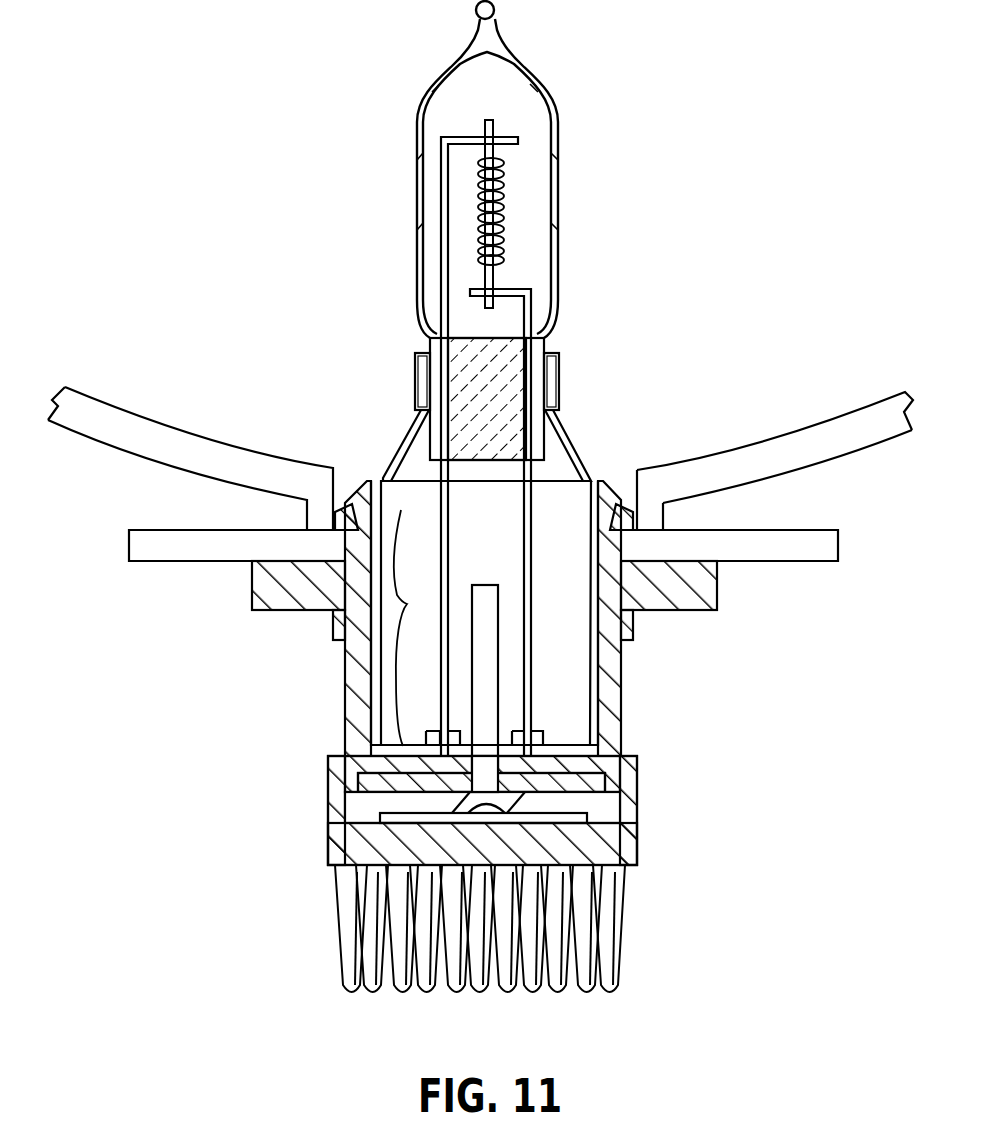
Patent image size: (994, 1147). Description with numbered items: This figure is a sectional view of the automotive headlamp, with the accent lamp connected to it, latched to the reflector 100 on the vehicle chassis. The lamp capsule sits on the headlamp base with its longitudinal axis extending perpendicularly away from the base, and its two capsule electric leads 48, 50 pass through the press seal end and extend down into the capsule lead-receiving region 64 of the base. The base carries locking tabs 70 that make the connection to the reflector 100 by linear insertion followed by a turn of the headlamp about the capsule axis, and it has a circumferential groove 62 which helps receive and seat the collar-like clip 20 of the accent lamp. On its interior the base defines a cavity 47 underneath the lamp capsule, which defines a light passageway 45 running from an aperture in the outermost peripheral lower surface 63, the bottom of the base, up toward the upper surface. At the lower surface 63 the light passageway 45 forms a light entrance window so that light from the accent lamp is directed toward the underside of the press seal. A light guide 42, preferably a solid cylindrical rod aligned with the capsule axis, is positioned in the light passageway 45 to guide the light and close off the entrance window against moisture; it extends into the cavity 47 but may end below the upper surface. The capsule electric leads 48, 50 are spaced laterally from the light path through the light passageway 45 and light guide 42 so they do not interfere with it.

The reflector 100 is at (90, 385).
The capsule electric lead 48 is at (442, 215).
The capsule electric lead 50 is at (533, 310).
The cavity 47 is at (472, 562).
The light passageway 45 is at (484, 492).
The capsule lead-receiving region 64 is at (414, 628).
The light guide 42 is at (498, 632).
The collar-like clip 20 is at (330, 628).
The circumferential groove 62 is at (343, 648).
The locking tabs 70 is at (717, 588).
The lower surface 63 is at (596, 788).